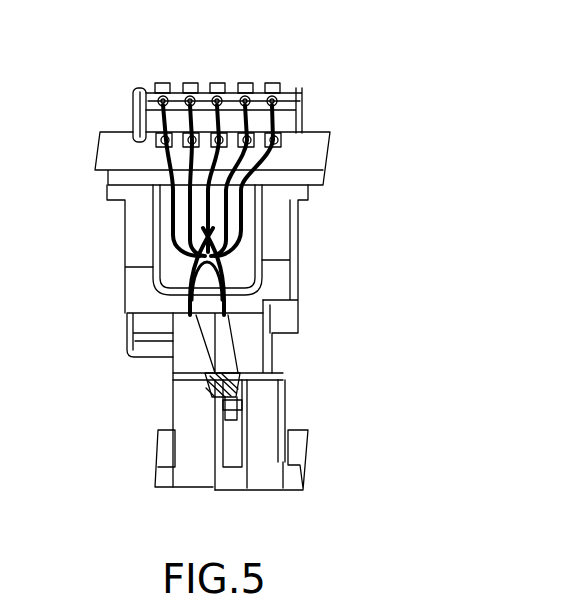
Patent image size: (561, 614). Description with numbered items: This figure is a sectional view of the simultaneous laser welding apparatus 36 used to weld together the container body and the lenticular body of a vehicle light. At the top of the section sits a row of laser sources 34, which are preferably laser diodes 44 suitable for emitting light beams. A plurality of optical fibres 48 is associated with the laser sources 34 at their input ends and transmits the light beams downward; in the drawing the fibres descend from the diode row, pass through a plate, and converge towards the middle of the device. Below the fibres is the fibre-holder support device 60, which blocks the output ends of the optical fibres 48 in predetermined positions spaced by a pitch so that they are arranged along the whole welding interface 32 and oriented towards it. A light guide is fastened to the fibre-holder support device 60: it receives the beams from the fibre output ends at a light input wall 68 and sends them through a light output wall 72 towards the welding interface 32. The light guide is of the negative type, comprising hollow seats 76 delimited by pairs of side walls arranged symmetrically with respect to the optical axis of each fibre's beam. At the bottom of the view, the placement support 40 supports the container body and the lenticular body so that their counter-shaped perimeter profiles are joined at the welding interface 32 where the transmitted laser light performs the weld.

The welding interface 32 is at (252, 367).
The laser sources 34 is at (246, 69).
The simultaneous laser welding apparatus 36 is at (112, 105).
The placement support 40 is at (290, 462).
The laser diodes 44 is at (266, 103).
The optical fibres 48 is at (300, 133).
The fibre-holder support device 60 is at (281, 289).
The light input wall 68 is at (137, 353).
The light output wall 72 is at (180, 321).
The hollow seats 76 is at (275, 334).